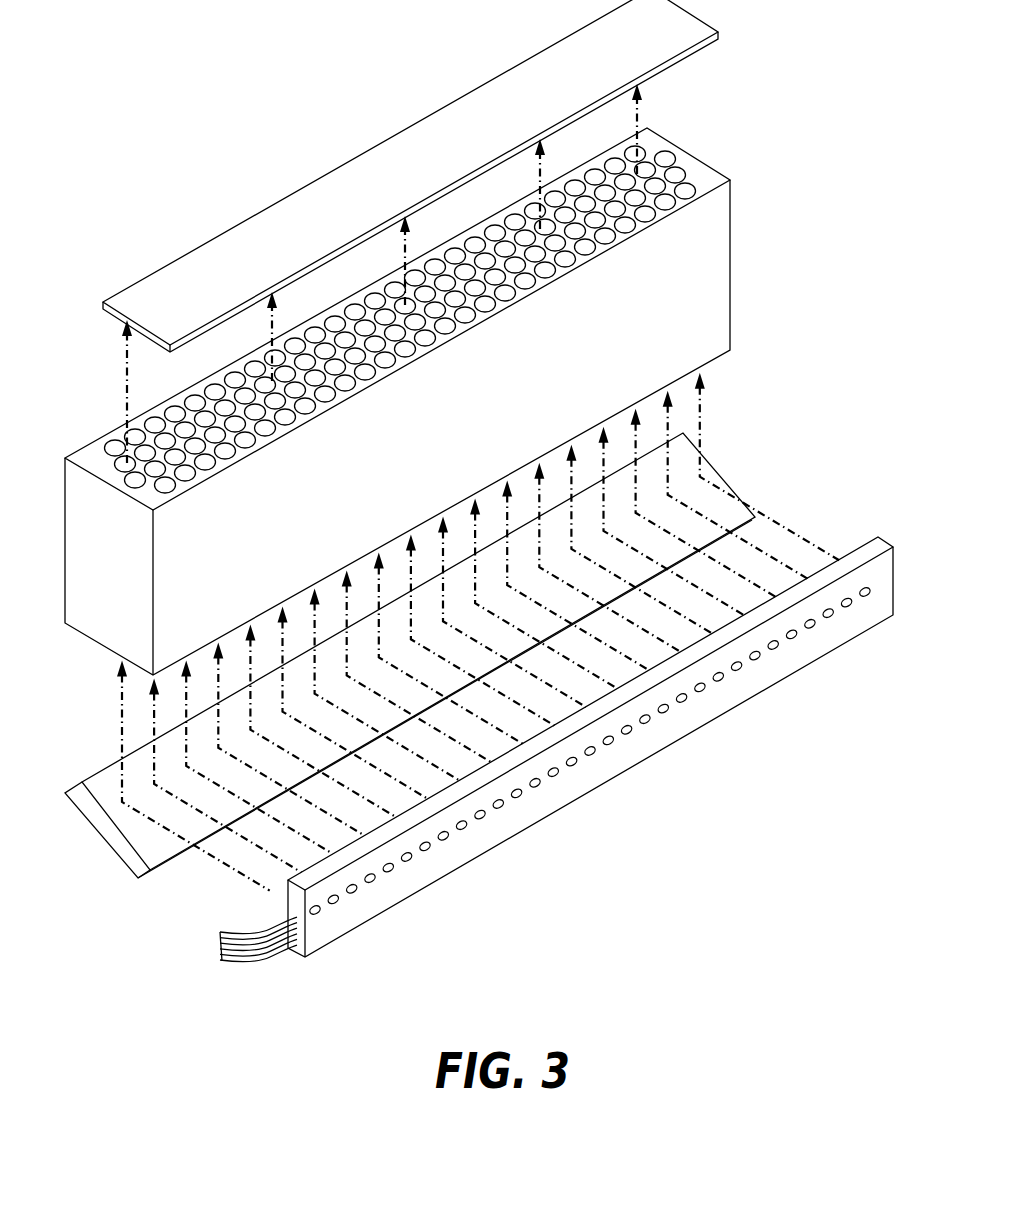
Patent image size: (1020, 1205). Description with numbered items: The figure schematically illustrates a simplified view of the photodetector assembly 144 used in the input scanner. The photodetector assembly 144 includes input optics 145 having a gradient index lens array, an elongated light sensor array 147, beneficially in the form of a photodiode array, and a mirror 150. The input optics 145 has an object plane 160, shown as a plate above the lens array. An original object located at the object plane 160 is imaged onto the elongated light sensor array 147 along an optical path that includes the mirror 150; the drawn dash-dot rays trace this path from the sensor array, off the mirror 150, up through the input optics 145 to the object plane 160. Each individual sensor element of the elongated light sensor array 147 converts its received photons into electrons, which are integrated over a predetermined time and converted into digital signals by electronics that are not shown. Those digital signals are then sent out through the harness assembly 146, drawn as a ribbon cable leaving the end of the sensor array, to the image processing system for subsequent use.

The photodetector assembly 144 is at (78, 407).
The input optics 145 is at (87, 628).
The harness assembly 146 is at (245, 947).
The elongated light sensor array 147 is at (640, 753).
The mirror 150 is at (715, 478).
The object plane 160 is at (223, 249).